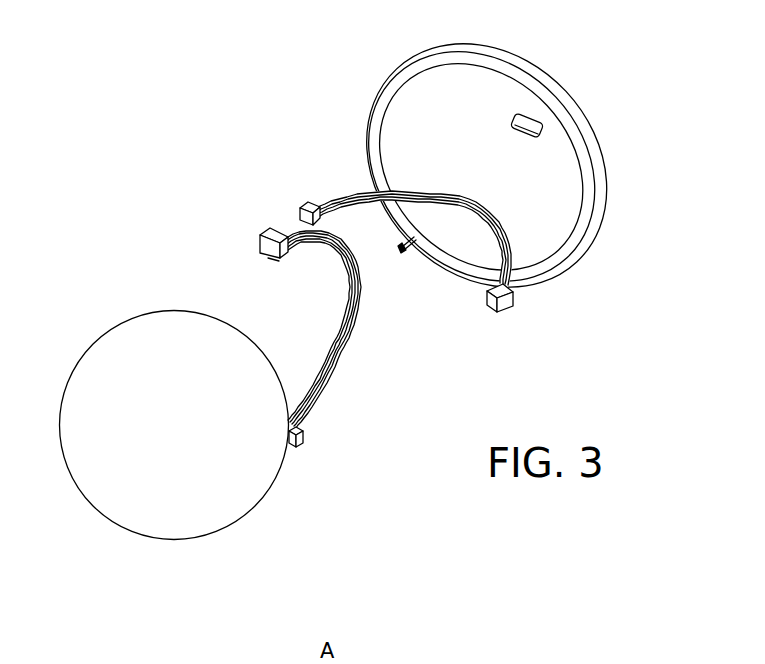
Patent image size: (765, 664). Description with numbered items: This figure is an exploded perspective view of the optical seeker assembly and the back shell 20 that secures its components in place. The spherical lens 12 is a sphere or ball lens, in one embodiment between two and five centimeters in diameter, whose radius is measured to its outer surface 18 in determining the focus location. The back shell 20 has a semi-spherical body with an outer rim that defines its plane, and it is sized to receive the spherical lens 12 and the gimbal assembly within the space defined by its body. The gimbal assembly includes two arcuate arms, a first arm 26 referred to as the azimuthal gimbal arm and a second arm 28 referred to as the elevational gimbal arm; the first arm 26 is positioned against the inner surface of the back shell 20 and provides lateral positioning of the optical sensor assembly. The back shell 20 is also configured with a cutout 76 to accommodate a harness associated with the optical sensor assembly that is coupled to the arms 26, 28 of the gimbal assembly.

The spherical lens 12 is at (79, 467).
The outer surface 18 is at (212, 504).
The back shell 20 is at (582, 91).
The first arm 26 is at (343, 379).
The second arm 28 is at (337, 190).
The cutout 76 is at (503, 109).